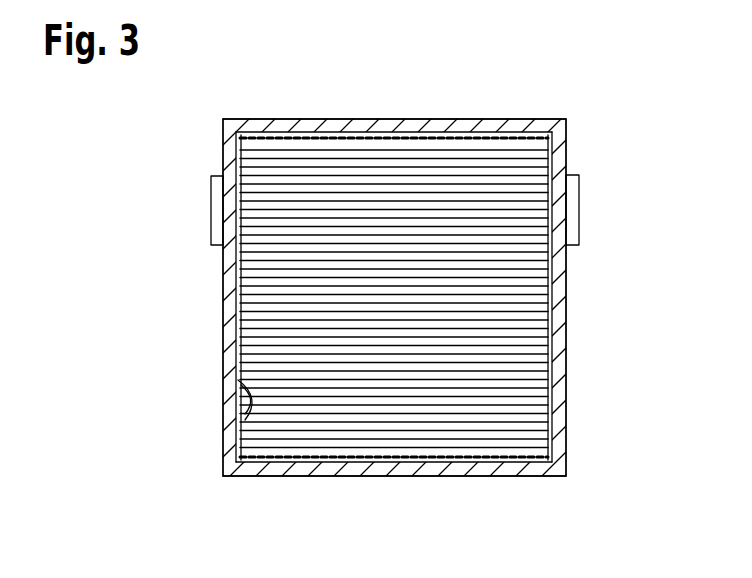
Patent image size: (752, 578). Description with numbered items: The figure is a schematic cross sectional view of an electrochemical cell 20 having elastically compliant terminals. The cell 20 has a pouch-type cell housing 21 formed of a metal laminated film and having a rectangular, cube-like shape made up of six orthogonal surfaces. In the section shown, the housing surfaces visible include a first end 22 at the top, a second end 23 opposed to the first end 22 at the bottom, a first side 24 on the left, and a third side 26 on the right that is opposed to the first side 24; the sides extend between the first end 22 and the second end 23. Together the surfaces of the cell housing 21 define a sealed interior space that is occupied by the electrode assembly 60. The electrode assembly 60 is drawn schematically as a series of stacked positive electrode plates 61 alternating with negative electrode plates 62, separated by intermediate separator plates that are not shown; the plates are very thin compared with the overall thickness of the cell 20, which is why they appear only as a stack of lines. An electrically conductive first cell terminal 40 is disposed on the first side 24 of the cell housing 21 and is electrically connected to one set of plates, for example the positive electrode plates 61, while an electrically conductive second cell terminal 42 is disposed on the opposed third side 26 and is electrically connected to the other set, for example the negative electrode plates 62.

The cell 20 is at (624, 109).
The cell housing 21 is at (338, 121).
The first end 22 is at (437, 128).
The second end 23 is at (512, 470).
The first side 24 is at (230, 257).
The third side 26 is at (560, 347).
The first cell terminal 40 is at (217, 203).
The second cell terminal 42 is at (578, 207).
The electrode assembly 60 is at (558, 276).
The positive electrode plate 61 is at (236, 381).
The negative electrode plate 62 is at (233, 381).